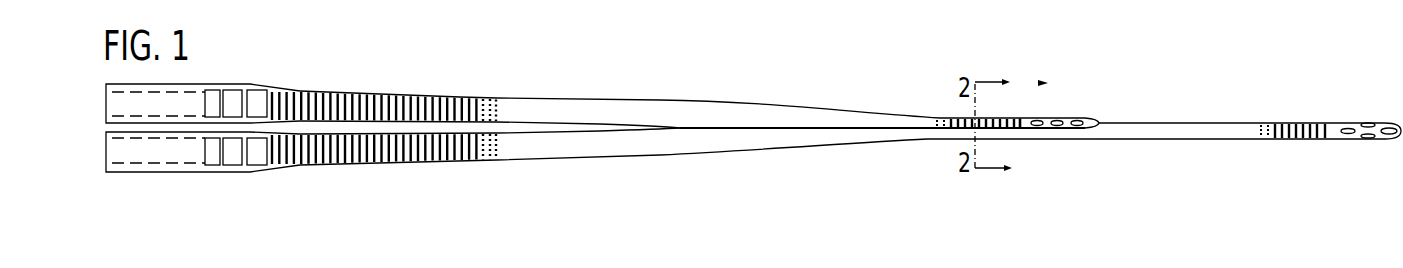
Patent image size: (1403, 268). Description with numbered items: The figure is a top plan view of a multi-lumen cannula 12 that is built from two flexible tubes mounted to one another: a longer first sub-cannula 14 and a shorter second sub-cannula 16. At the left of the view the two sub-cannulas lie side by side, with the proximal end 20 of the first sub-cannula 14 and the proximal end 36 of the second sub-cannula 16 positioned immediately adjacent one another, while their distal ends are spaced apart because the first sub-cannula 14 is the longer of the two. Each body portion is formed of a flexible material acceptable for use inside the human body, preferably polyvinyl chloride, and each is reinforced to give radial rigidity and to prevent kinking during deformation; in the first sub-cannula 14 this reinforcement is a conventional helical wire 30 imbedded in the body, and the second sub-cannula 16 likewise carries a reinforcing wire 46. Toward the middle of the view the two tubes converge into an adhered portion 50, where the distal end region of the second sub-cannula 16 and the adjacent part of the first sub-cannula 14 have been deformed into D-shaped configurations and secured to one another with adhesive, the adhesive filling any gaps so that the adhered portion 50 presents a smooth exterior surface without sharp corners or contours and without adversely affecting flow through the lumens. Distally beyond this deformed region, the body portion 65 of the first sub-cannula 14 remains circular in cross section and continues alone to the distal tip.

The multi-lumen cannula 12 is at (818, 82).
The first sub-cannula 14 is at (379, 167).
The second sub-cannula 16 is at (379, 88).
The proximal end 20 is at (192, 172).
The proximal end 36 is at (197, 84).
The reinforcing wire 46 is at (543, 105).
The helical wire 30 is at (543, 147).
The adhered portion 50 is at (1101, 177).
The body portion 65 is at (1232, 122).